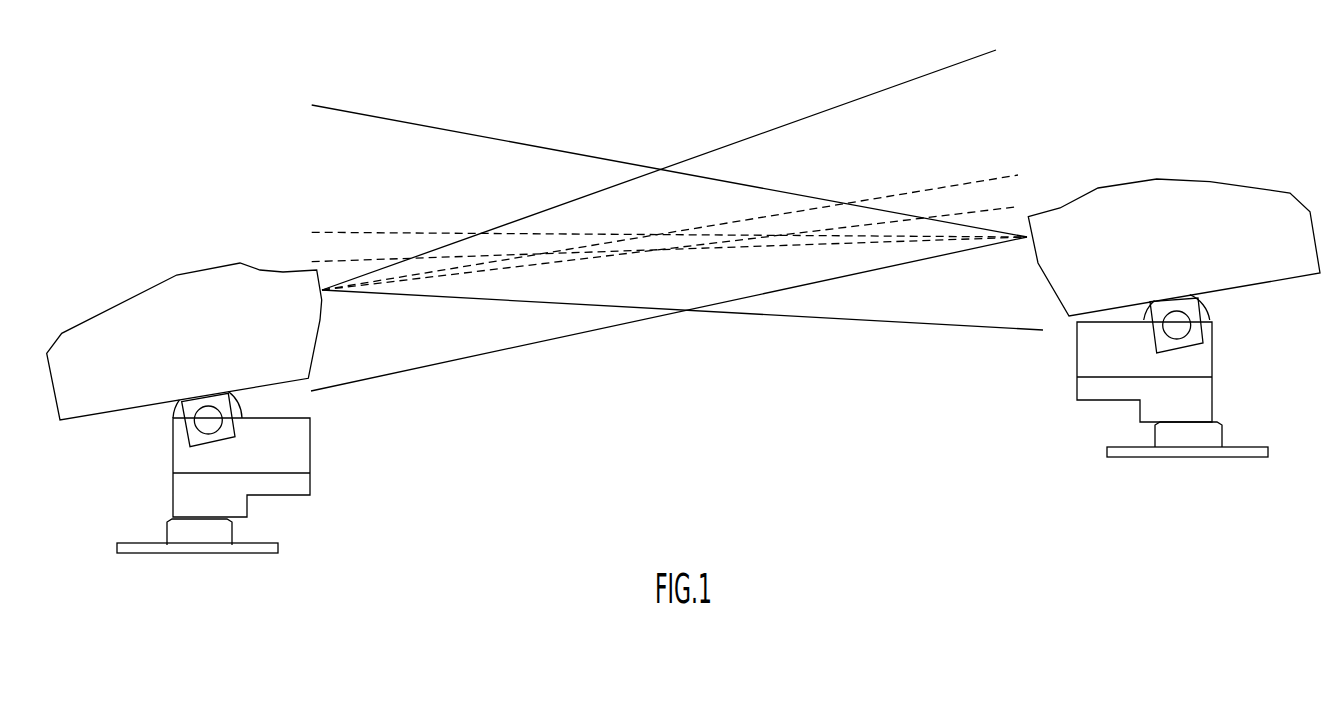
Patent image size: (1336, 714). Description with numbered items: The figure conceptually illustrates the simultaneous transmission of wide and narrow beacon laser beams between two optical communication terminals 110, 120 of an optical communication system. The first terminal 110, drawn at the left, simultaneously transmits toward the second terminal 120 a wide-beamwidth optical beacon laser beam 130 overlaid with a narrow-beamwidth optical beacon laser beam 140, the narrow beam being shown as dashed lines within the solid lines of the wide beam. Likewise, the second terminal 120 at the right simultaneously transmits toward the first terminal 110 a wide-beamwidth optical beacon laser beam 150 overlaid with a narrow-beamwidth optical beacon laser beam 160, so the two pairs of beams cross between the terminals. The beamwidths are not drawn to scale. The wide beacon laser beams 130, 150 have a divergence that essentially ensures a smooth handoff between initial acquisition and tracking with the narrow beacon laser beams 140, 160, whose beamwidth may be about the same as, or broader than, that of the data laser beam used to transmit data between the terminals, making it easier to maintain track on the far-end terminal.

The optical communication terminal 110 is at (143, 290).
The optical communication terminal 120 is at (1207, 183).
The wide-beamwidth optical beacon laser beam 130 is at (843, 102).
The narrow-beamwidth optical beacon laser beam 140 is at (917, 190).
The wide-beamwidth optical beacon laser beam 150 is at (427, 127).
The narrow-beamwidth optical beacon laser beam 160 is at (355, 233).